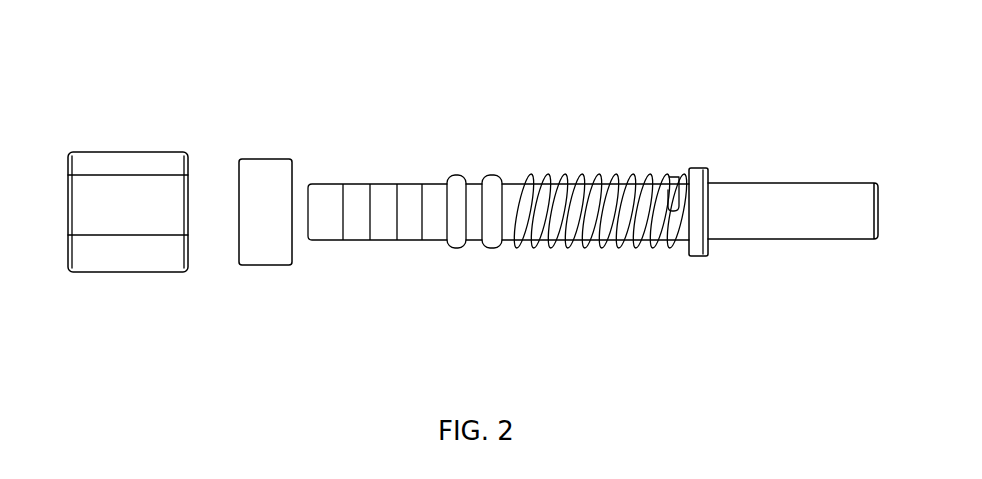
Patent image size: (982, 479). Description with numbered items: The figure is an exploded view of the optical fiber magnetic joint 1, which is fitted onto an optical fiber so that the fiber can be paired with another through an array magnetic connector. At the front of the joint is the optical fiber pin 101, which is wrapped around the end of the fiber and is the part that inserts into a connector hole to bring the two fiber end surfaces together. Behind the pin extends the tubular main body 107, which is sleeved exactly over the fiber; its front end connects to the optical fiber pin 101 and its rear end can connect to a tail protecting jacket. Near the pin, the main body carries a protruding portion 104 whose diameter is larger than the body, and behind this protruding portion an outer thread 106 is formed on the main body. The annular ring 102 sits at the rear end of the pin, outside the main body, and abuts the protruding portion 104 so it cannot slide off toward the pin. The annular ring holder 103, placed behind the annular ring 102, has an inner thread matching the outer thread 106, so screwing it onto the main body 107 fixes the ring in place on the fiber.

The optical fiber magnetic joint 1 is at (147, 80).
The optical fiber pin 101 is at (800, 233).
The annular ring 102 is at (267, 255).
The annular ring holder 103 is at (142, 262).
The protruding portion 104 is at (702, 253).
The outer thread 106 is at (592, 190).
The main body 107 is at (557, 247).